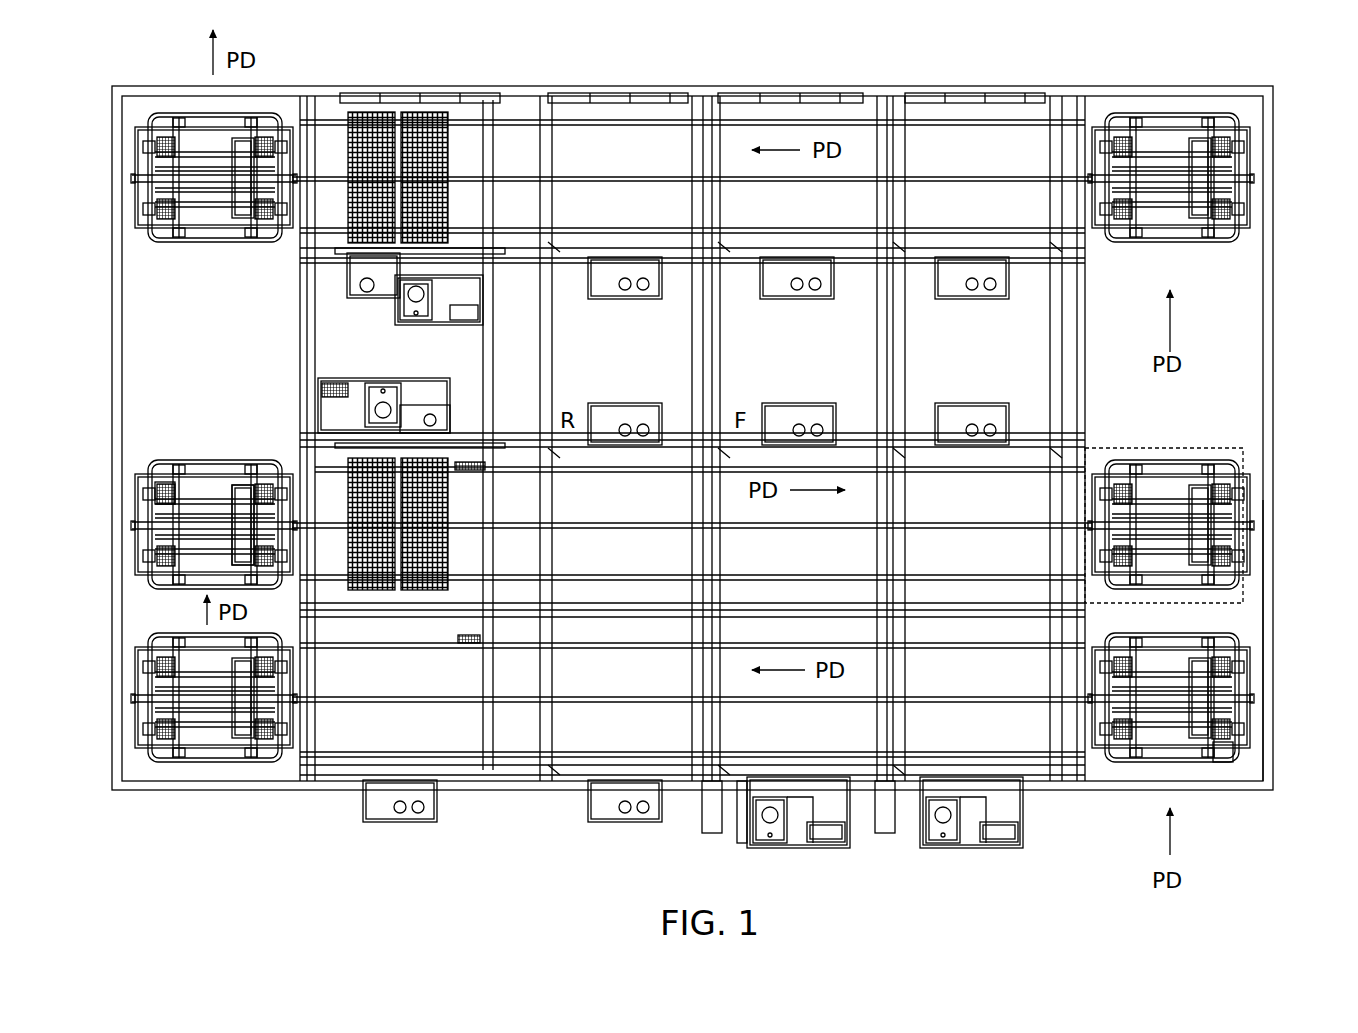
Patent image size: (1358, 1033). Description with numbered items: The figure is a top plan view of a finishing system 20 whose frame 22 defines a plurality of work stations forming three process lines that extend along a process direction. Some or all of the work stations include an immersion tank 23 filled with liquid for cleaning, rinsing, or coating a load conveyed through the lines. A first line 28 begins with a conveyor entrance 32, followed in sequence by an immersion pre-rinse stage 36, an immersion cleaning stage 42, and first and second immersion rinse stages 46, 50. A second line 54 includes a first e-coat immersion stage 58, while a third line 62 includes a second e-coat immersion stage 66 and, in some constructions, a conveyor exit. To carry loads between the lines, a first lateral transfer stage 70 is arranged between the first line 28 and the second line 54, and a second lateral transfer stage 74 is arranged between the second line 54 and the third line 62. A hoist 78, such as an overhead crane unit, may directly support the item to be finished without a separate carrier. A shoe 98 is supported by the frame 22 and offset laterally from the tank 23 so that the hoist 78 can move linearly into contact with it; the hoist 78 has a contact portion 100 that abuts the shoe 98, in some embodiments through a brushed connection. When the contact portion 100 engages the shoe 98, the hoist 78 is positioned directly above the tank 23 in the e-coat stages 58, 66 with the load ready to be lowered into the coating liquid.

The finishing system 20 is at (1198, 75).
The frame 22 is at (150, 88).
The immersion tank 23 is at (530, 562).
The first line 28 is at (1290, 690).
The conveyor entrance 32 is at (1215, 808).
The immersion pre-rinse stage 36 is at (972, 862).
The immersion cleaning stage 42 is at (800, 857).
The first immersion rinse stage 46 is at (625, 832).
The second immersion rinse stage 50 is at (455, 806).
The second line 54 is at (100, 507).
The first e-coat immersion stage 58 is at (522, 493).
The third line 62 is at (1290, 162).
The second e-coat immersion stage 66 is at (515, 152).
The first lateral transfer stage 70 is at (158, 437).
The second lateral transfer stage 74 is at (1185, 255).
The hoist 78 is at (247, 482).
The shoe 98 is at (482, 468).
The contact portion 100 is at (265, 470).